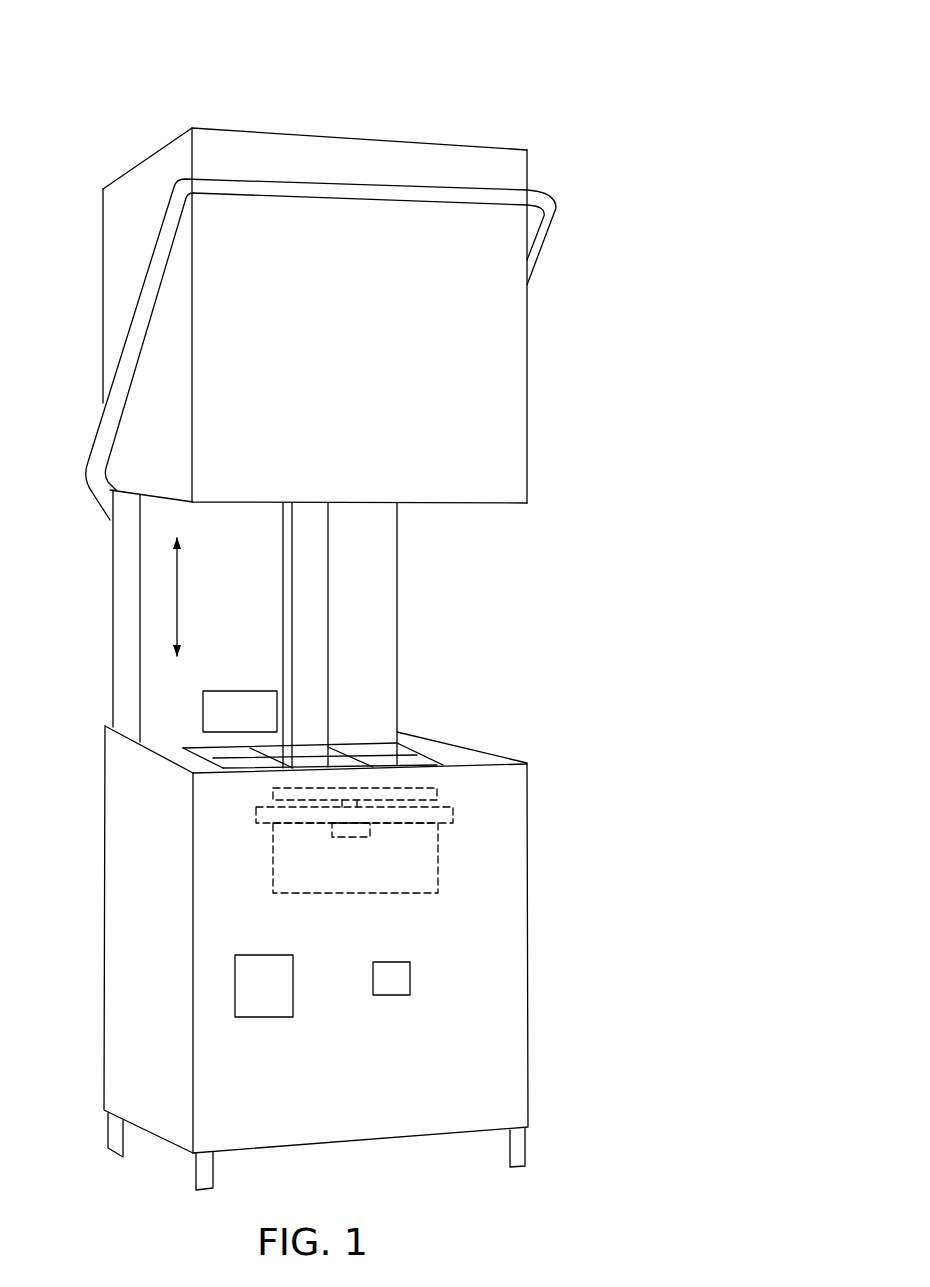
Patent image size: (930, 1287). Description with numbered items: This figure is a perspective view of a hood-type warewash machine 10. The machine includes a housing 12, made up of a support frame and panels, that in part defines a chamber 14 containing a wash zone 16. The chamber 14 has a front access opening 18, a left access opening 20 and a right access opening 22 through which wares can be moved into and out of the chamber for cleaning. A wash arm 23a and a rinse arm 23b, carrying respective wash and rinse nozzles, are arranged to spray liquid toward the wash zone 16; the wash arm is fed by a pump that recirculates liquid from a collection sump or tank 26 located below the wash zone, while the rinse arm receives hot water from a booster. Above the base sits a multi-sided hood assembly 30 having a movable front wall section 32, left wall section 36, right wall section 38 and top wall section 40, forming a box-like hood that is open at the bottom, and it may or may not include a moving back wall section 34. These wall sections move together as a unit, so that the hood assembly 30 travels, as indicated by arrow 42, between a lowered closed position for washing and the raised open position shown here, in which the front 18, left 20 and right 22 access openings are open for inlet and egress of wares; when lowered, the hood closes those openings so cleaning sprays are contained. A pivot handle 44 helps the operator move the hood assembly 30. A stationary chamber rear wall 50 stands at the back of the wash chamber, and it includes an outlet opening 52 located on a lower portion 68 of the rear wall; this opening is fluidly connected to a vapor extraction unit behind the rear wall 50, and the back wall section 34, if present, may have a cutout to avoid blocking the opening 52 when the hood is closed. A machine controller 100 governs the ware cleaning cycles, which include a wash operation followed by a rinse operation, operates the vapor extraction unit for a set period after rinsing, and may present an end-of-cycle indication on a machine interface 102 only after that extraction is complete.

The warewash machine 10 is at (679, 54).
The housing 12 is at (358, 939).
The chamber 14 is at (594, 590).
The wash zone 16 is at (359, 707).
The front access opening 18 is at (336, 301).
The left access opening 20 is at (124, 768).
The right access opening 22 is at (571, 513).
The wash arm 23a is at (453, 817).
The rinse arm 23b is at (437, 790).
The collection sump or tank 26 is at (413, 893).
The multi-sided hood assembly 30 is at (336, 286).
The front wall section 32 is at (517, 314).
The back wall section 34 is at (103, 216).
The left wall section 36 is at (112, 273).
The right wall section 38 is at (528, 348).
The top wall section 40 is at (322, 136).
The arrow 42 is at (181, 578).
The pivot handle 44 is at (565, 218).
The stationary chamber rear wall 50 is at (385, 622).
The outlet opening 52 is at (250, 700).
The lower portion of the rear wall 68 is at (150, 667).
The machine controller 100 is at (293, 1000).
The machine interface 102 is at (410, 975).